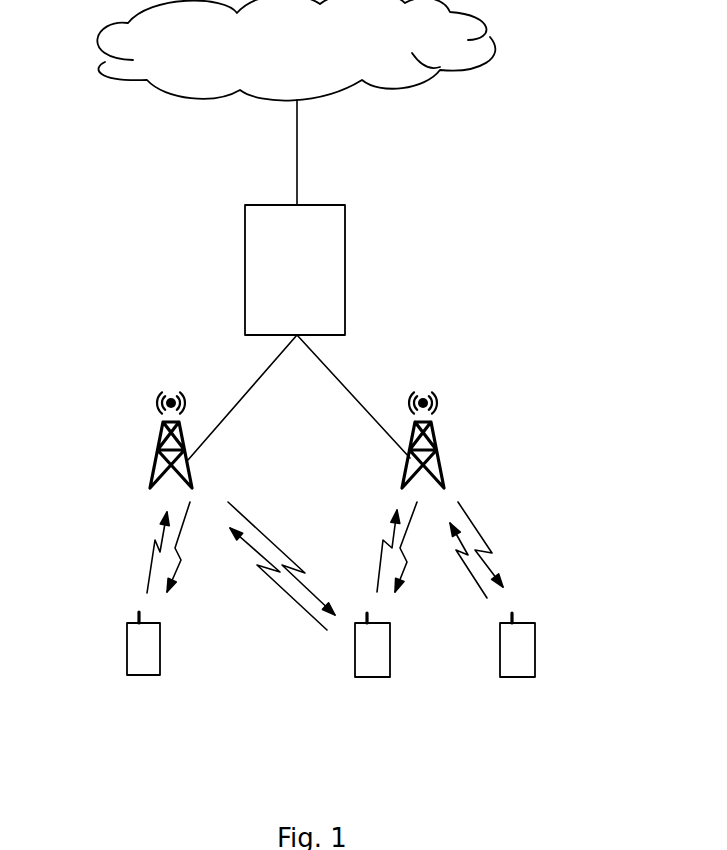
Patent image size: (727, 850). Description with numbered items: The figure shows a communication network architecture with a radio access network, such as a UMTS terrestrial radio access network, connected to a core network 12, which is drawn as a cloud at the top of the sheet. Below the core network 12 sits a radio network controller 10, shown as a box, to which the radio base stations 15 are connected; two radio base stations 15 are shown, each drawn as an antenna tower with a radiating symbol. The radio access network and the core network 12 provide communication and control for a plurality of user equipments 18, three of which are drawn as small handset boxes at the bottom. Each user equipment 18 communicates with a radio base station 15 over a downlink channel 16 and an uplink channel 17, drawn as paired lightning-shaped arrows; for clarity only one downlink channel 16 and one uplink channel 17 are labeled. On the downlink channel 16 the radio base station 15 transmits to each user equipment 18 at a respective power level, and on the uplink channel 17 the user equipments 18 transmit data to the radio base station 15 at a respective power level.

The radio network controller 10 is at (345, 261).
The core network 12 is at (492, 37).
The radio base station 15 is at (152, 455).
The downlink channel 16 is at (238, 512).
The uplink channel 17 is at (152, 551).
The user equipment 18 is at (126, 647).